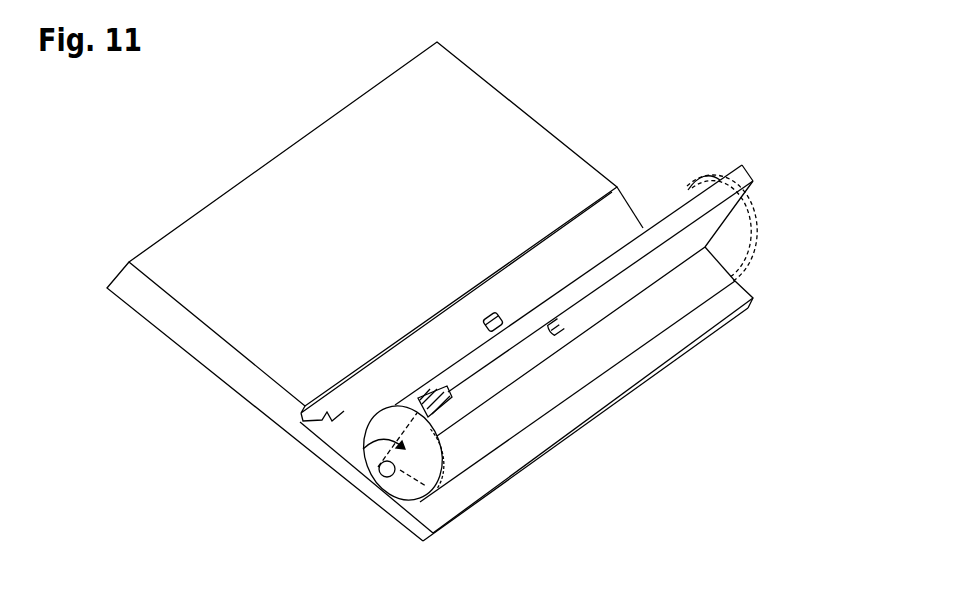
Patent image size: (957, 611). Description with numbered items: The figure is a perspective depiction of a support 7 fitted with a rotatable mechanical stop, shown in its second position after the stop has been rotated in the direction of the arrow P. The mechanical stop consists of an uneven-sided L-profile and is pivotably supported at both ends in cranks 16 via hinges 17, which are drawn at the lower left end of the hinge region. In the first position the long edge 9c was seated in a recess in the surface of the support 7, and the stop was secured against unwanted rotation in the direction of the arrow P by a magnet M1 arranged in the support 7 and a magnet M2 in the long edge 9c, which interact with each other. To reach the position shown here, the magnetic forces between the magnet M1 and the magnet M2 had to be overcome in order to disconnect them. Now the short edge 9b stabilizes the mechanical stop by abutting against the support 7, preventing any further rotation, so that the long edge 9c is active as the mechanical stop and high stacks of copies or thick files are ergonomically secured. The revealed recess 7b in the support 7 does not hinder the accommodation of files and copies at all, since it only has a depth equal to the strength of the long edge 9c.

The support 7 is at (360, 262).
The recess 7b is at (312, 424).
The short edge 9b is at (675, 295).
The long edge 9c is at (743, 166).
The crank 16 is at (695, 182).
The hinge 17 is at (380, 478).
The arrow P is at (379, 470).
The magnet M1 is at (495, 332).
The magnet M2 is at (567, 334).